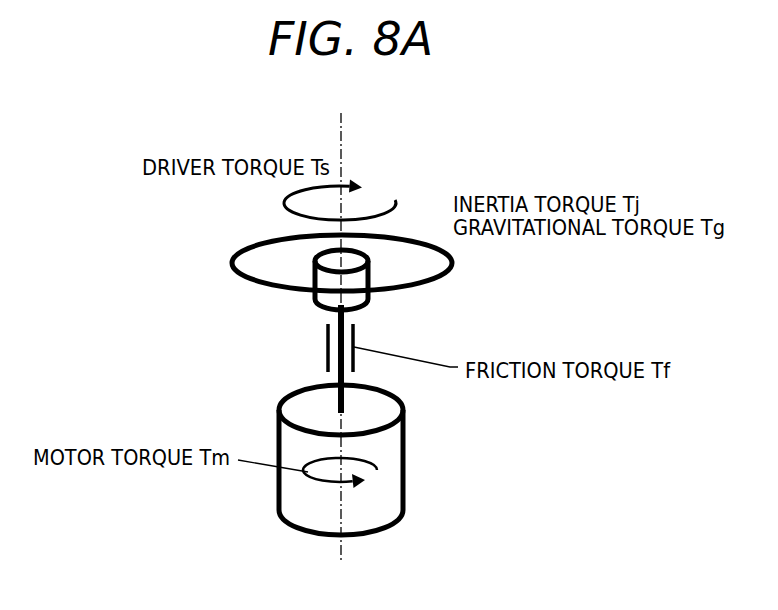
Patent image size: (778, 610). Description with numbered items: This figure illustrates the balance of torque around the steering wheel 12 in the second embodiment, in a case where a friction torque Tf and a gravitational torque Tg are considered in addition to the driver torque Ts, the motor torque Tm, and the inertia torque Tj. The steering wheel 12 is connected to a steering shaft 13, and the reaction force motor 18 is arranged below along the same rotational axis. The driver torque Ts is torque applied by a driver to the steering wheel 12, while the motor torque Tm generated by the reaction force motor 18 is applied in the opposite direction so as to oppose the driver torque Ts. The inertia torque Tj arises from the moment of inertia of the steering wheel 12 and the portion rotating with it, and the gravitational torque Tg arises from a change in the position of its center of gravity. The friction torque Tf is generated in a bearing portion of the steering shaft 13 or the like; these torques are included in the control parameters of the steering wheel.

The steering wheel 12 is at (452, 263).
The steering shaft 13 is at (327, 348).
The reaction force motor 18 is at (404, 463).